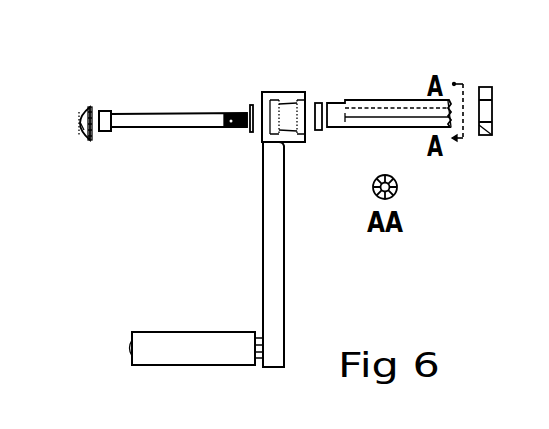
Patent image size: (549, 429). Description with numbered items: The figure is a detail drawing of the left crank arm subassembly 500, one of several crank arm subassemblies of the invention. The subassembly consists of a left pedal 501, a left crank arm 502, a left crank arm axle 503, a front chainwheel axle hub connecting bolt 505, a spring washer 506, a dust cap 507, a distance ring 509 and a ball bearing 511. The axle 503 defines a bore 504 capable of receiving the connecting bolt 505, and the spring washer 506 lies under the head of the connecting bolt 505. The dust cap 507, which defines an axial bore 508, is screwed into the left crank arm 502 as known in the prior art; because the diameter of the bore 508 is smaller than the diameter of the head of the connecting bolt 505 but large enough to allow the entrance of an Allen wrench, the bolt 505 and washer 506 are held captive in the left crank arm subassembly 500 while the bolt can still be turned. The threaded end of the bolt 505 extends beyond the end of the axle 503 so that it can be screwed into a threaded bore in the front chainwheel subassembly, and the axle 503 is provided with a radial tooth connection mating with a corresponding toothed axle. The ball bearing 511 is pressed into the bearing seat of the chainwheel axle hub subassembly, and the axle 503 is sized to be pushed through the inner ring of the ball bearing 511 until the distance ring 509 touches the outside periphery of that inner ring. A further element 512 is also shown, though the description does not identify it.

The left crank arm subassembly 500 is at (117, 247).
The left pedal 501 is at (191, 329).
The left crank arm 502 is at (261, 262).
The left crank arm axle 503 is at (372, 98).
The bore 504 is at (460, 113).
The front chainwheel axle hub connecting bolt 505 is at (141, 111).
The spring washer 506 is at (252, 103).
The dust cap 507 is at (80, 104).
The axial bore 508 is at (70, 118).
The distance ring 509 is at (317, 101).
The ball bearing 511 is at (490, 72).
The clip slot 512 is at (498, 115).